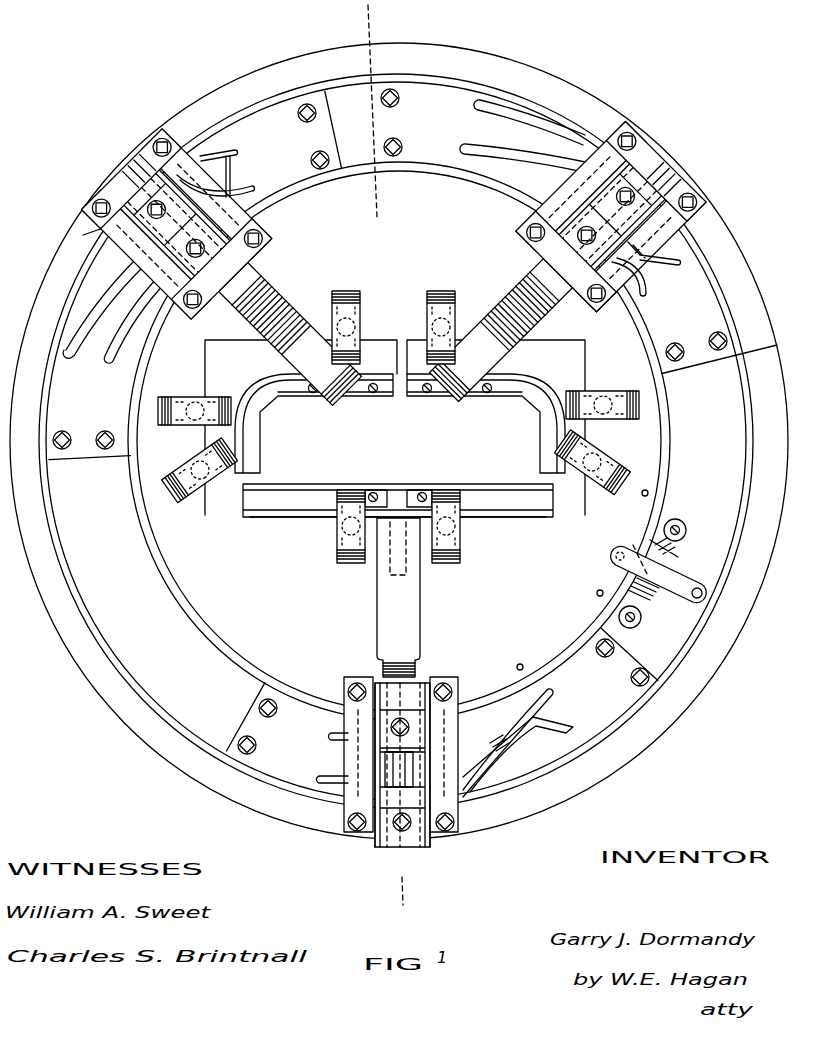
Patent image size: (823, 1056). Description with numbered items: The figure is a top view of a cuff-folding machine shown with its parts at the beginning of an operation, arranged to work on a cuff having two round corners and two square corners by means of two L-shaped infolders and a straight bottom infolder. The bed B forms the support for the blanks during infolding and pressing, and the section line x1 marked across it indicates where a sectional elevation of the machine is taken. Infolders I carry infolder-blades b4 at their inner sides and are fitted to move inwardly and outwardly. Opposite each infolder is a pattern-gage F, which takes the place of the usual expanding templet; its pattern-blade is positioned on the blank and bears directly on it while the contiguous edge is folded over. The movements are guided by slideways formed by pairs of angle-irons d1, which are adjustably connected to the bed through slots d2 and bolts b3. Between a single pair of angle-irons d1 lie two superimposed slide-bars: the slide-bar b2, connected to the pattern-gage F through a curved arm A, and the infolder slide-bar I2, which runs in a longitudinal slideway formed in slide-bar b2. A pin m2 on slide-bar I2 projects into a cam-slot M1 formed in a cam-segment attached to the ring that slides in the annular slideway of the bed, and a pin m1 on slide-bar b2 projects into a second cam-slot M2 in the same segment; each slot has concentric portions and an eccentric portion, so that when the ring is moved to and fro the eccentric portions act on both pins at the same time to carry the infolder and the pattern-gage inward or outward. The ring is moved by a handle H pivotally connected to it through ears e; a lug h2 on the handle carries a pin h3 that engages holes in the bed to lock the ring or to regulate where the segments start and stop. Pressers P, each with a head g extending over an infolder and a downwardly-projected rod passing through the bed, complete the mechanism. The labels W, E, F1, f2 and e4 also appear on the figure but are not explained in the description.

The section line x' x' x1 is at (380, 464).
The bed B is at (413, 422).
The slide-bar b2 is at (431, 838).
The bolts b3 is at (455, 821).
The infolder-blades b4 is at (518, 664).
The infolders I is at (395, 531).
The infolder slide-bar I2 is at (106, 234).
The pattern-gage F is at (314, 423).
The frame bar E is at (486, 423).
The cross bar F' F1 is at (398, 500).
The lower edge f2 is at (493, 510).
The presser heads g is at (538, 464).
The curved arm A is at (432, 606).
The pressers P is at (604, 420).
The clamp blocks W is at (413, 875).
The angle-irons d1 is at (401, 765).
The slots d2 is at (401, 766).
The pin m1 is at (340, 812).
The pin m2 is at (620, 198).
The pin e4 is at (625, 210).
The cam-slot M1 is at (254, 189).
The cam-slot M2 is at (238, 149).
The handle H is at (708, 598).
The lug h2 is at (653, 538).
The pin h3 is at (616, 559).
The ears e is at (687, 540).